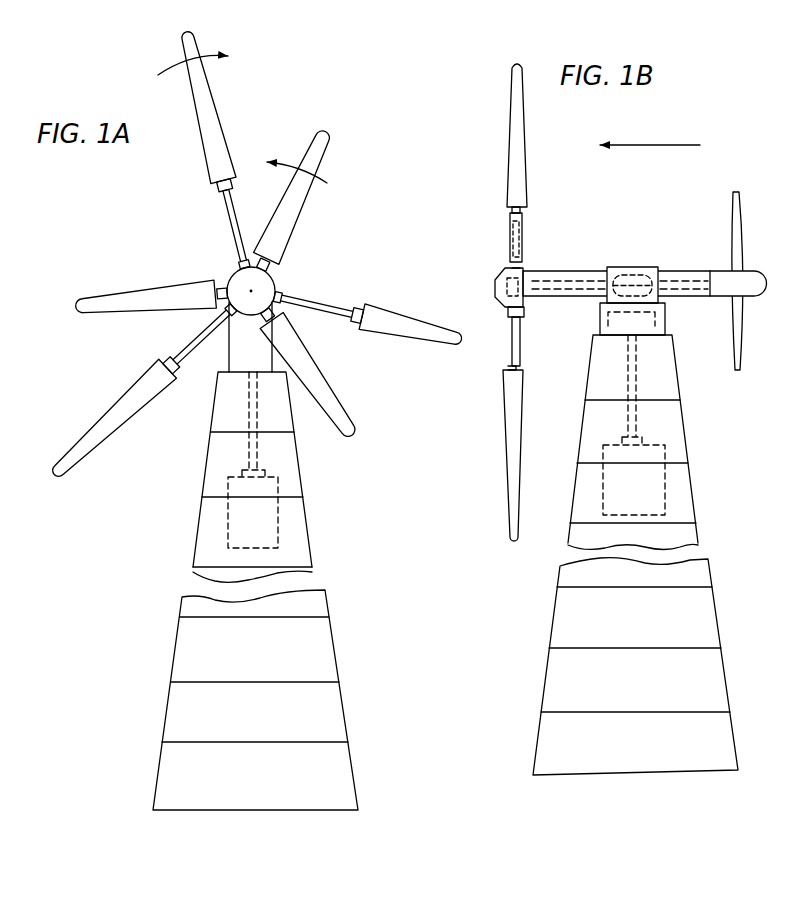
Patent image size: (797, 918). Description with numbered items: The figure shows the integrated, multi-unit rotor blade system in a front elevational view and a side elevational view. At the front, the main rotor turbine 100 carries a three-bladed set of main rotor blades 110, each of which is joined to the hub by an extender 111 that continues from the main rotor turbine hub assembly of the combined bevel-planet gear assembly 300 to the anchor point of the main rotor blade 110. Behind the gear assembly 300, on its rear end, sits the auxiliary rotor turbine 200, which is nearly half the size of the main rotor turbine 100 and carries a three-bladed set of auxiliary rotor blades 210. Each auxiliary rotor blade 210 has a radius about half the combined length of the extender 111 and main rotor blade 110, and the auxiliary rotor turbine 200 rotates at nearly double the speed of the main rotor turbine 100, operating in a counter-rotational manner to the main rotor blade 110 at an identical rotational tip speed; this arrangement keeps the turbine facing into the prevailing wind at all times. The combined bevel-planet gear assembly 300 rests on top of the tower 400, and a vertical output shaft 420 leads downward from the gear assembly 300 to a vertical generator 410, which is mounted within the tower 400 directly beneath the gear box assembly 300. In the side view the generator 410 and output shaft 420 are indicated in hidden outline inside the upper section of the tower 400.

In FIG. 1B, the main rotor turbine 100 is at (513, 302).
In FIG. 1A, the main rotor blade 110 is at (207, 110).
In FIG. 1B, the main rotor blade 110 is at (510, 120).
In FIG. 1A, the extender 111 is at (225, 232).
In FIG. 1B, the extender 111 is at (510, 232).
In FIG. 1B, the auxiliary rotor turbine 200 is at (659, 279).
In FIG. 1A, the auxiliary rotor blade 210 is at (325, 152).
In FIG. 1B, the auxiliary rotor blade 210 is at (746, 238).
In FIG. 1B, the combined bevel-planet gear assembly 300 is at (643, 255).
In FIG. 1A, the tower 400 is at (185, 557).
In FIG. 1B, the tower 400 is at (513, 618).
In FIG. 1A, the vertical generator 410 is at (282, 537).
In FIG. 1B, the vertical generator 410 is at (665, 495).
In FIG. 1A, the vertical output shaft 420 is at (250, 445).
In FIG. 1B, the vertical output shaft 420 is at (637, 390).